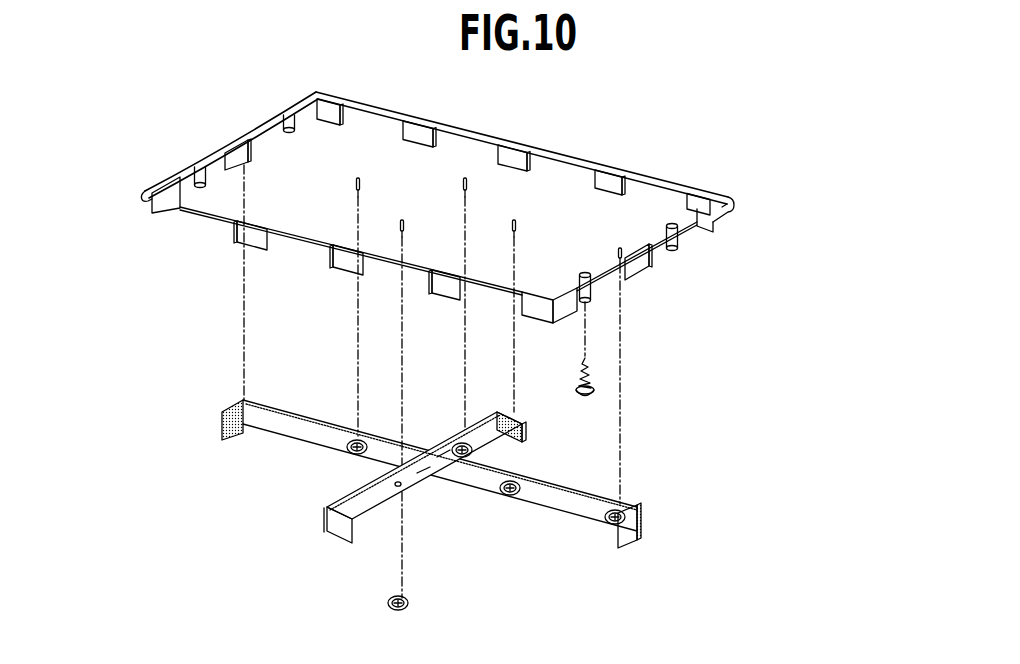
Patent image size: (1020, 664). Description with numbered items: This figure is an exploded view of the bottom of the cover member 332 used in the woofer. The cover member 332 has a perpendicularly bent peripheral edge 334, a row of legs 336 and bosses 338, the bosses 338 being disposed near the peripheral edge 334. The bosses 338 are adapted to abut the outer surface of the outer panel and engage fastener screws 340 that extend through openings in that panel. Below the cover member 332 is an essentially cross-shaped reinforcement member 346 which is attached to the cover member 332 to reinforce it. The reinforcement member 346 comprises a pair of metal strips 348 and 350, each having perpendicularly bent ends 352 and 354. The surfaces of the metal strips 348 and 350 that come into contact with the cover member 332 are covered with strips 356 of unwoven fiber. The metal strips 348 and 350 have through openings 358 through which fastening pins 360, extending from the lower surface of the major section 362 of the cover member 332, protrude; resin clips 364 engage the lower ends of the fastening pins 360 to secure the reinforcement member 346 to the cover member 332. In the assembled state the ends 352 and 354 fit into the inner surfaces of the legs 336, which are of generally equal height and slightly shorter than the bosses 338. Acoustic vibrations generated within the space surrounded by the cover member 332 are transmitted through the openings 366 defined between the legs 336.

The cover member 332 is at (437, 153).
The peripheral edge 334 is at (228, 137).
The legs 336 is at (613, 177).
The bosses 338 is at (289, 113).
The fastener screws 340 is at (575, 370).
The reinforcement member 346 is at (444, 477).
The metal strip 348 is at (560, 498).
The metal strip 350 is at (342, 500).
The bent ends 352 is at (219, 428).
The bent ends 354 is at (524, 430).
The strips of unwoven fiber 356 is at (292, 412).
The through openings 358 is at (402, 489).
The fastening pins 360 is at (353, 185).
The major section 362 is at (450, 157).
The resin clips 364 is at (346, 448).
The openings 366 is at (373, 127).